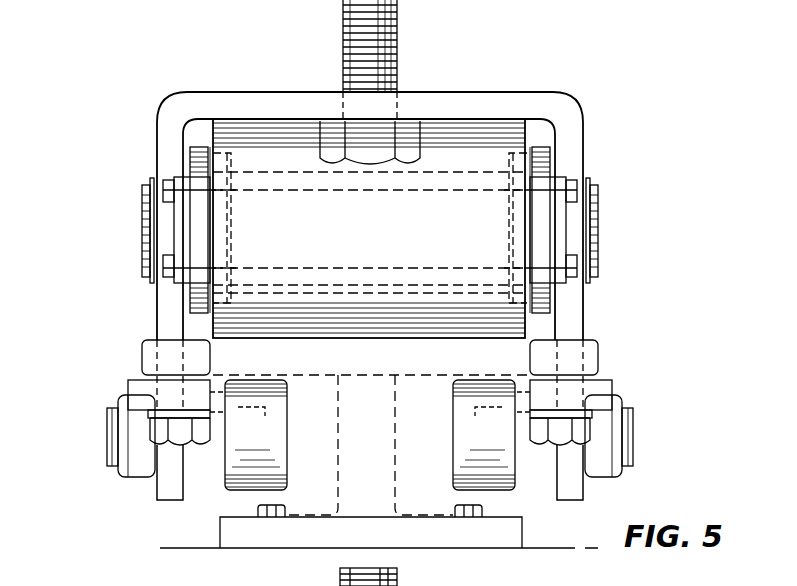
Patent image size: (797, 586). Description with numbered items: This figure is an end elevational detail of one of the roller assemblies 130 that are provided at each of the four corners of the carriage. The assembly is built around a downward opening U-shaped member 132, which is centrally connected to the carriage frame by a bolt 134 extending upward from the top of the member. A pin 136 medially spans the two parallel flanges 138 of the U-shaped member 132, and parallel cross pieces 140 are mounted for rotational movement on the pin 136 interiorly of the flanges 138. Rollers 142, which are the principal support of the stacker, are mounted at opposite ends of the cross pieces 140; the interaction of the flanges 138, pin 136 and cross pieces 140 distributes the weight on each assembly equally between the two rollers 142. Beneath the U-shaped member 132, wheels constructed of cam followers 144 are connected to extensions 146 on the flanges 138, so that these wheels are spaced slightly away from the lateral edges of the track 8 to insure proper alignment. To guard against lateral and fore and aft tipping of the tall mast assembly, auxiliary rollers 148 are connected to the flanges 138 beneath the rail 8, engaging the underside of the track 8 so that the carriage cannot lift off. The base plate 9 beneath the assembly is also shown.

The roller assembly 130 is at (231, 72).
The U-shaped member 132 is at (181, 118).
The bolt 134 is at (397, 53).
The pin 136 is at (598, 250).
The flanges 138 is at (161, 300).
The cross pieces 140 is at (541, 171).
The rollers 142 is at (220, 316).
The cam followers 144 is at (162, 357).
The extensions 146 is at (140, 388).
The auxiliary rollers 148 is at (236, 467).
The track 8 is at (338, 400).
The base plate 9 is at (545, 548).